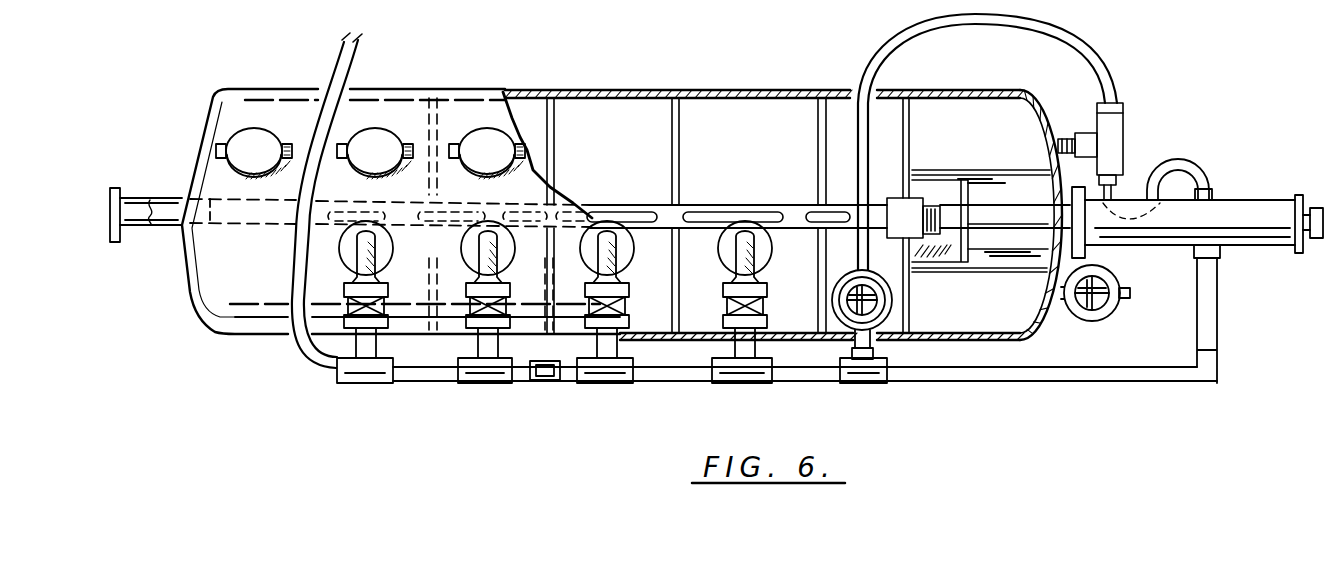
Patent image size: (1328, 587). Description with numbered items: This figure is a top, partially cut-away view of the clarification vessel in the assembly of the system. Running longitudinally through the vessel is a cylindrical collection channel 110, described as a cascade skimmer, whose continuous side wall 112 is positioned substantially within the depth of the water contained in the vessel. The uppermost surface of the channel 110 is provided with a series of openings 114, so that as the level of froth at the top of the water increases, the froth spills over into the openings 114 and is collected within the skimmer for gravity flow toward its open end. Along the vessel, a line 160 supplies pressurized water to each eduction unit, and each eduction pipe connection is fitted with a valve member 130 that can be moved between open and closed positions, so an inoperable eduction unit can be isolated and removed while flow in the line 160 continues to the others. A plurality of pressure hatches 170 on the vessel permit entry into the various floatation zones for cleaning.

The collection channel 110 is at (634, 197).
The continuous side wall 112 is at (733, 207).
The openings 114 is at (540, 178).
The valve member 130 is at (373, 302).
The line 160 is at (296, 268).
The pressure hatches 170 is at (265, 138).